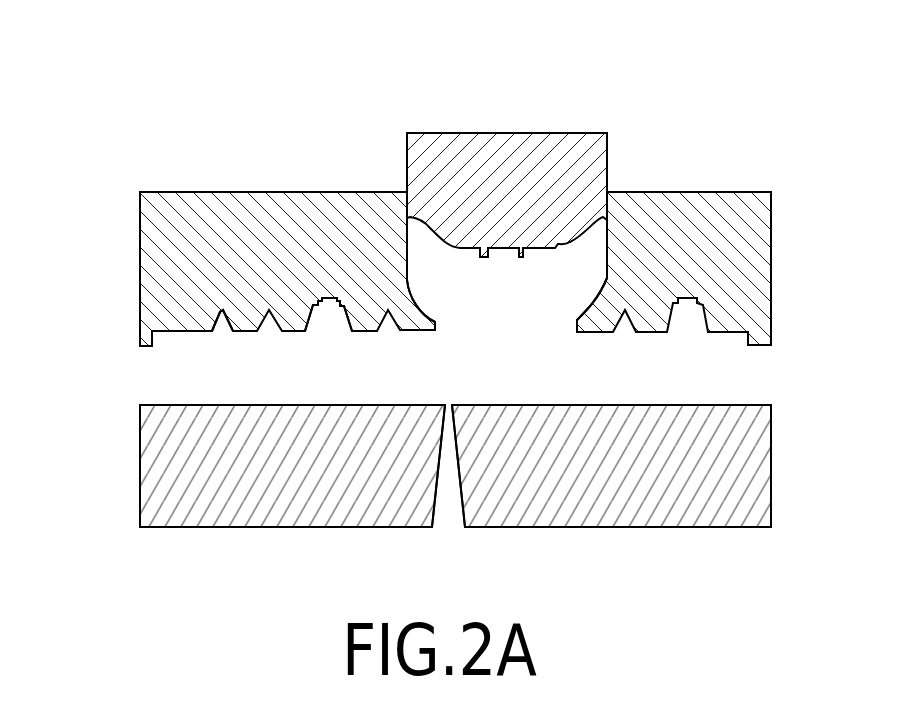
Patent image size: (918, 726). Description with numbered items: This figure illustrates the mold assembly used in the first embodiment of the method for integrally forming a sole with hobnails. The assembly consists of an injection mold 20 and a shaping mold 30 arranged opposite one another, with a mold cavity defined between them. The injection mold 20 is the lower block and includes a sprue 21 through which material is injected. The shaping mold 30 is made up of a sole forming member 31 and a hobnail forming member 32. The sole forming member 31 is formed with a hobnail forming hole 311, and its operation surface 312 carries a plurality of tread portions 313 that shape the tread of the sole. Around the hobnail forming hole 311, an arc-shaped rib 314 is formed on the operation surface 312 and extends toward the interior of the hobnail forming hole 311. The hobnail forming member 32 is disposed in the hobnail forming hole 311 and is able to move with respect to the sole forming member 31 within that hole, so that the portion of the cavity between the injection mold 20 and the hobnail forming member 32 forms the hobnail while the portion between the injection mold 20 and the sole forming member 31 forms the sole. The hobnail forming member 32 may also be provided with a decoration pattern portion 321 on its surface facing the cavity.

The injection mold 20 is at (128, 471).
The sprue 21 is at (452, 418).
The shaping mold 30 is at (766, 88).
The sole forming member 31 is at (694, 185).
The hobnail forming hole 311 is at (456, 316).
The operation surface 312 is at (182, 332).
The tread portions 313 is at (218, 306).
The arc-shaped rib 314 is at (587, 323).
The hobnail forming member 32 is at (617, 150).
The decoration pattern portion 321 is at (485, 249).